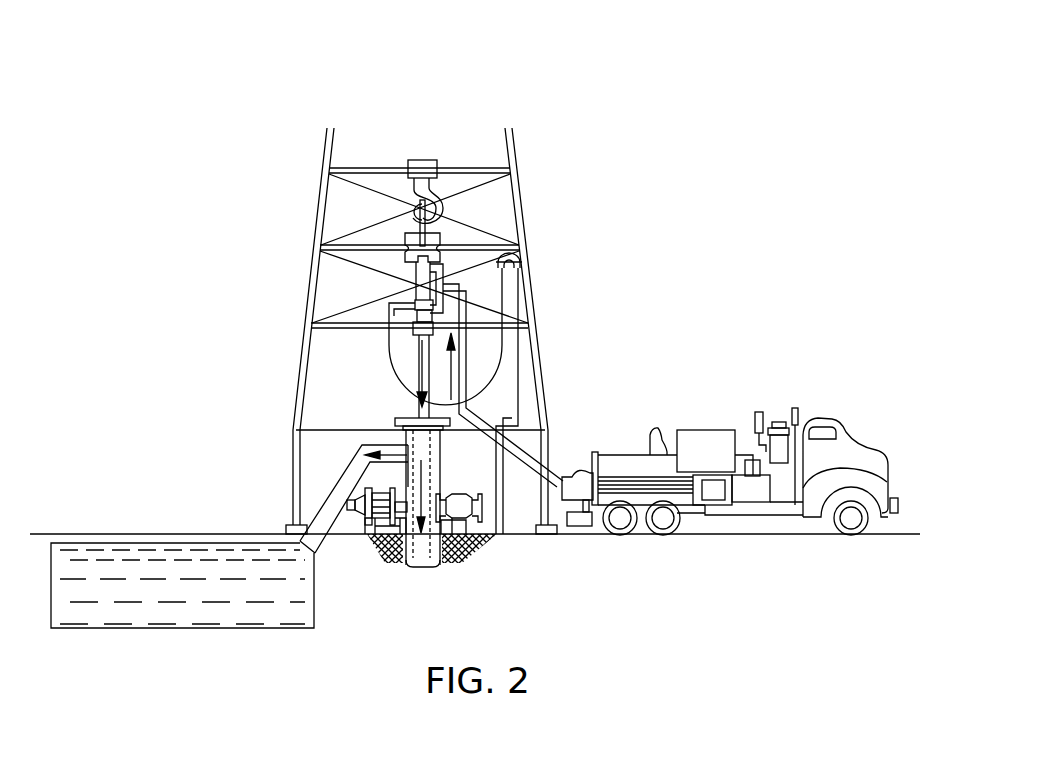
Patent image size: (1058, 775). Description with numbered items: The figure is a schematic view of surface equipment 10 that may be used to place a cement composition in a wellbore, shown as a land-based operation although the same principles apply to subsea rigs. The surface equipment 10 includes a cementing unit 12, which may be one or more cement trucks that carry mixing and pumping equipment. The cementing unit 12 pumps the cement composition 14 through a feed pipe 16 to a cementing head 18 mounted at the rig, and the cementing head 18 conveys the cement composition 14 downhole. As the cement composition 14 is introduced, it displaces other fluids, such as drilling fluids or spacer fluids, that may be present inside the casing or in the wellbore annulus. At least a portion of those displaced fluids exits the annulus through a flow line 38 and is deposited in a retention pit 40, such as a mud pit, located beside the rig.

The surface equipment 10 is at (748, 143).
The cementing unit 12 is at (757, 521).
The cement composition 14 is at (420, 363).
The feed pipe 16 is at (548, 440).
The cementing head 18 is at (452, 236).
The flow line 38 is at (336, 520).
The retention pit 40 is at (132, 628).